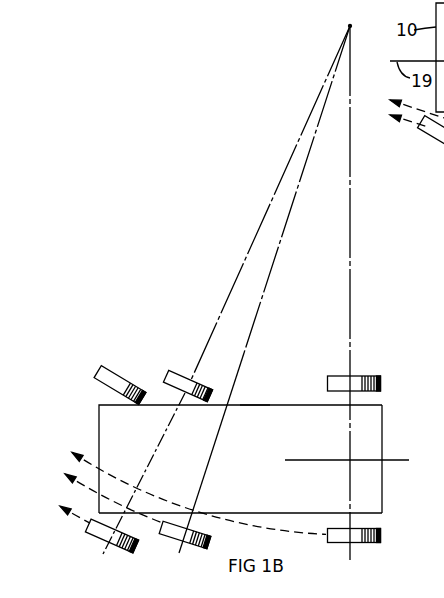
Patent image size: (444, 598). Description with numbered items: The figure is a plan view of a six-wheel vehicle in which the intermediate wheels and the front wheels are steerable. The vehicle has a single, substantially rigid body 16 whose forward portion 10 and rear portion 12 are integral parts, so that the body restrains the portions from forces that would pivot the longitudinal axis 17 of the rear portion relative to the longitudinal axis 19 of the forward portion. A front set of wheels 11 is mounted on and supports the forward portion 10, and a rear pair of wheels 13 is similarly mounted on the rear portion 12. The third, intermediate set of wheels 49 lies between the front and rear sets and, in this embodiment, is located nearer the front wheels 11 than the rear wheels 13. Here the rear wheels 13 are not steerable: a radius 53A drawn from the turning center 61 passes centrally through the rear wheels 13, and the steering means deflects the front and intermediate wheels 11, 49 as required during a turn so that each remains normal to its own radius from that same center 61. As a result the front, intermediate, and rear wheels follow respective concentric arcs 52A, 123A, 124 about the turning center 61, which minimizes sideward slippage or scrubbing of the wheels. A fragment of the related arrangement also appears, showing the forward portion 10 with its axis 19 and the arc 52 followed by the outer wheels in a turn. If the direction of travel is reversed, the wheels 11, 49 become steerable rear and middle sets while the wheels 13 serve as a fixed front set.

The forward portion of the vehicle 10 is at (99, 418).
The front set of wheels 11 is at (117, 372).
The vehicle rear portion 12 is at (383, 411).
The rear pair of wheels 13 is at (340, 375).
The rigid body 16 is at (257, 400).
The longitudinal axis of the rear body portion 17 is at (388, 460).
The longitudinal axis of the forward body portion 19 is at (90, 461).
The intermediate wheels 49 is at (176, 368).
The arc 52 is at (418, 128).
The concentric arc of the front wheels 52A is at (82, 522).
The radius 53A is at (352, 313).
The turning center 61 is at (350, 26).
The concentric arc of the intermediate wheels 123A is at (90, 490).
The concentric arc of the rear wheels 124 is at (152, 495).